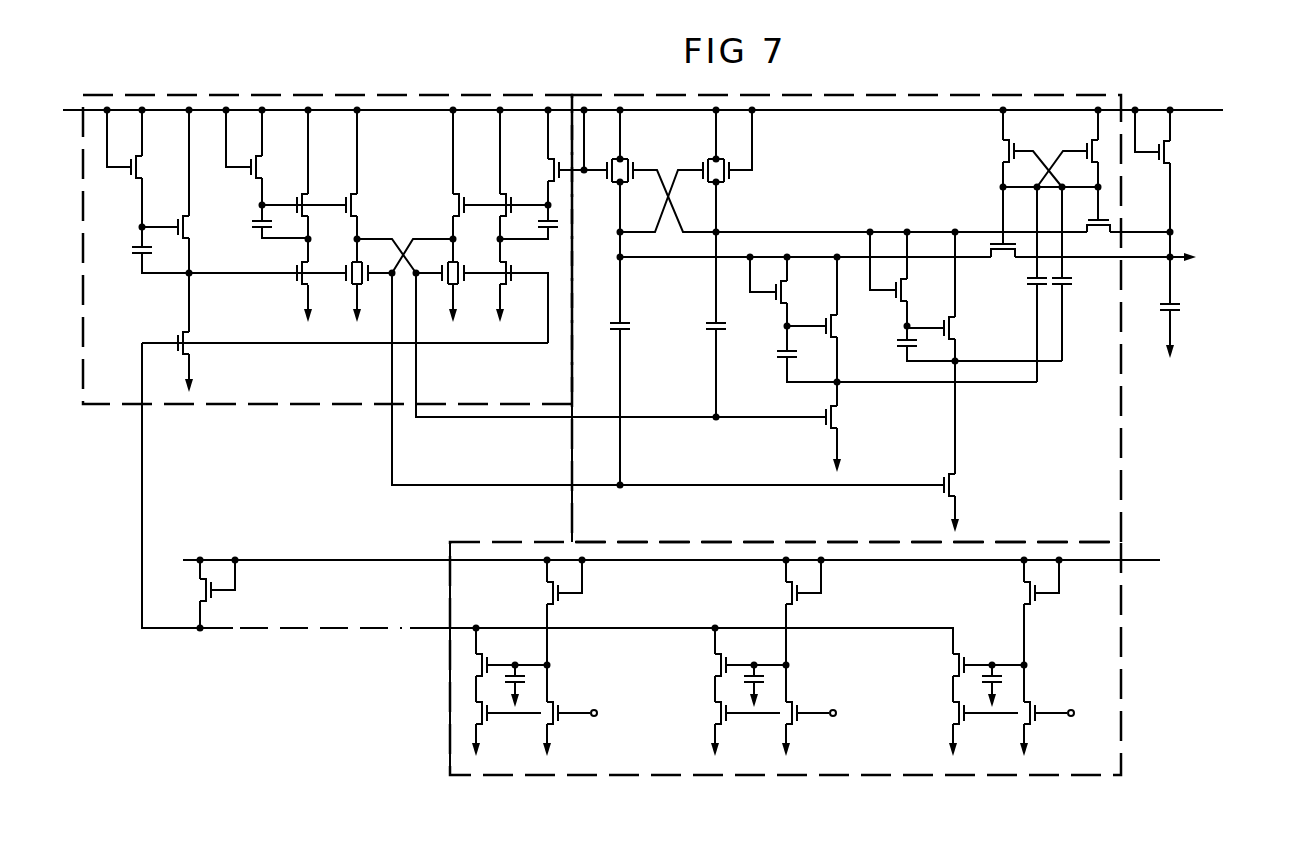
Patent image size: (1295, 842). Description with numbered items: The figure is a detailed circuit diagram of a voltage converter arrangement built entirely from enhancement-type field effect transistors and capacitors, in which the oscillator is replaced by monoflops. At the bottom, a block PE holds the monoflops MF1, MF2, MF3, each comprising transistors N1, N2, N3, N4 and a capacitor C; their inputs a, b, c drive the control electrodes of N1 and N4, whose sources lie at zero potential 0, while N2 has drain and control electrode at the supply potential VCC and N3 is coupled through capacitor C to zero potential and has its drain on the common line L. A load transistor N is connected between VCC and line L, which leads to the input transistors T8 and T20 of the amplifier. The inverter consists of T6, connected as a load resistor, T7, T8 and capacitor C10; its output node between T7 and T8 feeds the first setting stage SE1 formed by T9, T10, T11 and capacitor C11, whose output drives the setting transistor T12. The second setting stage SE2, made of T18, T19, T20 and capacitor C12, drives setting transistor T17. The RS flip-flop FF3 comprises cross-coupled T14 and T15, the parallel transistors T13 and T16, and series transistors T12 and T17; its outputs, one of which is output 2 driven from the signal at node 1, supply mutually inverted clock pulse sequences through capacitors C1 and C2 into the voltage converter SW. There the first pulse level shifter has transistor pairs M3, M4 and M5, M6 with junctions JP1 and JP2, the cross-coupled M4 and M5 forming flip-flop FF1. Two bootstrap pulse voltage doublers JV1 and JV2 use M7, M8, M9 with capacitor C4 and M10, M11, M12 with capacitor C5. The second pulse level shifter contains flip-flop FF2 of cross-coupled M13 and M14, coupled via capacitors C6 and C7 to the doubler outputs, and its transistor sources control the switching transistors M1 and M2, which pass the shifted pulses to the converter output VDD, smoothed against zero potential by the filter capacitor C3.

The transistor T6 is at (139, 168).
The transistor T7 is at (180, 221).
The input transistor T8 is at (345, 336).
The transistor T9 is at (271, 169).
The transistor T10 is at (306, 186).
The input transistor T11 is at (267, 283).
The transistor T12 is at (371, 186).
The transistor T13 is at (339, 286).
The flip-flop transistor T14 is at (378, 286).
The flip-flop transistor T15 is at (435, 286).
The transistor T16 is at (502, 302).
The transistor T17 is at (485, 186).
The transistor T18 is at (526, 221).
The transistor T19 is at (562, 165).
The input transistor T20 is at (524, 266).
The capacitor C10 is at (144, 250).
The capacitor C11 is at (269, 223).
The capacitor C12 is at (529, 226).
The capacitor C1 is at (608, 358).
The capacitor C2 is at (703, 324).
The filter capacitor C3 is at (1159, 307).
The capacitor C4 is at (892, 362).
The capacitor C5 is at (967, 347).
The capacitor C6 is at (1030, 284).
The capacitor C7 is at (1071, 274).
The capacitor C is at (762, 686).
The first setting stage SE1 is at (264, 165).
The second setting stage SE2 is at (523, 152).
The bistable flip-flop FF1 is at (689, 200).
The bistable flip-flop FF2 is at (1072, 171).
The bistable flip-flop FF3 is at (405, 245).
The junction point JP1 is at (901, 213).
The junction point JP2 is at (984, 202).
The delay element JV1 is at (788, 281).
The delay element JV2 is at (910, 268).
The first switching transistor M1 is at (1080, 262).
The second switching transistor M2 is at (1120, 213).
The transistor M3 is at (608, 171).
The transistor M4 is at (672, 182).
The transistor M5 is at (672, 171).
The transistor M6 is at (737, 146).
The transistor M7 is at (805, 304).
The transistor M8 is at (828, 331).
The input transistor M9 is at (848, 418).
The transistor M10 is at (882, 286).
The transistor M11 is at (954, 353).
The input transistor M12 is at (972, 488).
The transistor M13 is at (1067, 165).
The transistor M14 is at (1030, 177).
The voltage converter SW is at (733, 318).
The programmable element circuit PE is at (684, 658).
The monoflop MF1 is at (1021, 612).
The monoflop MF2 is at (782, 612).
The monoflop MF3 is at (542, 612).
The transistor N is at (217, 594).
The transistor N1 is at (807, 705).
The transistor N2 is at (813, 592).
The transistor N3 is at (750, 665).
The transistor N4 is at (747, 724).
The line L is at (547, 498).
The output 1 is at (668, 379).
The output 2 is at (621, 345).
The supply potential VCC is at (662, 343).
The output supply voltage VDD is at (1208, 207).
The zero potential 0 is at (679, 525).
The input a is at (1075, 726).
The input b is at (840, 726).
The input c is at (598, 725).